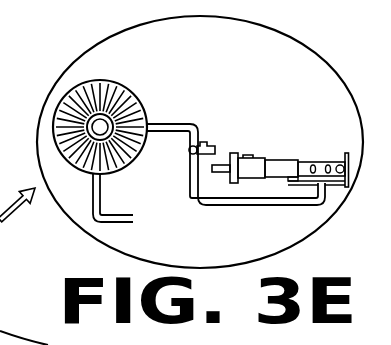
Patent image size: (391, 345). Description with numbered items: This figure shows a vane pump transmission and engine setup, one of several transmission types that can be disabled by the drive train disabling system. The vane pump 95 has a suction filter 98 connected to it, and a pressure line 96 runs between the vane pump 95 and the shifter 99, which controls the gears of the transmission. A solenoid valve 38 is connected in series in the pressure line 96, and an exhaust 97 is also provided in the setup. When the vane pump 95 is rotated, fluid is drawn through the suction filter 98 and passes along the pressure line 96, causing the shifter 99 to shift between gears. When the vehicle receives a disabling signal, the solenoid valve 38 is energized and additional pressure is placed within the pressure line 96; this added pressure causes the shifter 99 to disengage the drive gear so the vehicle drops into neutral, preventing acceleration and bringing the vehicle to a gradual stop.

The solenoid valve 38 is at (190, 151).
The vane pump 95 is at (117, 77).
The pressure line 96 is at (265, 207).
The exhaust 97 is at (205, 143).
The suction filter 98 is at (115, 222).
The shifter 99 is at (343, 188).